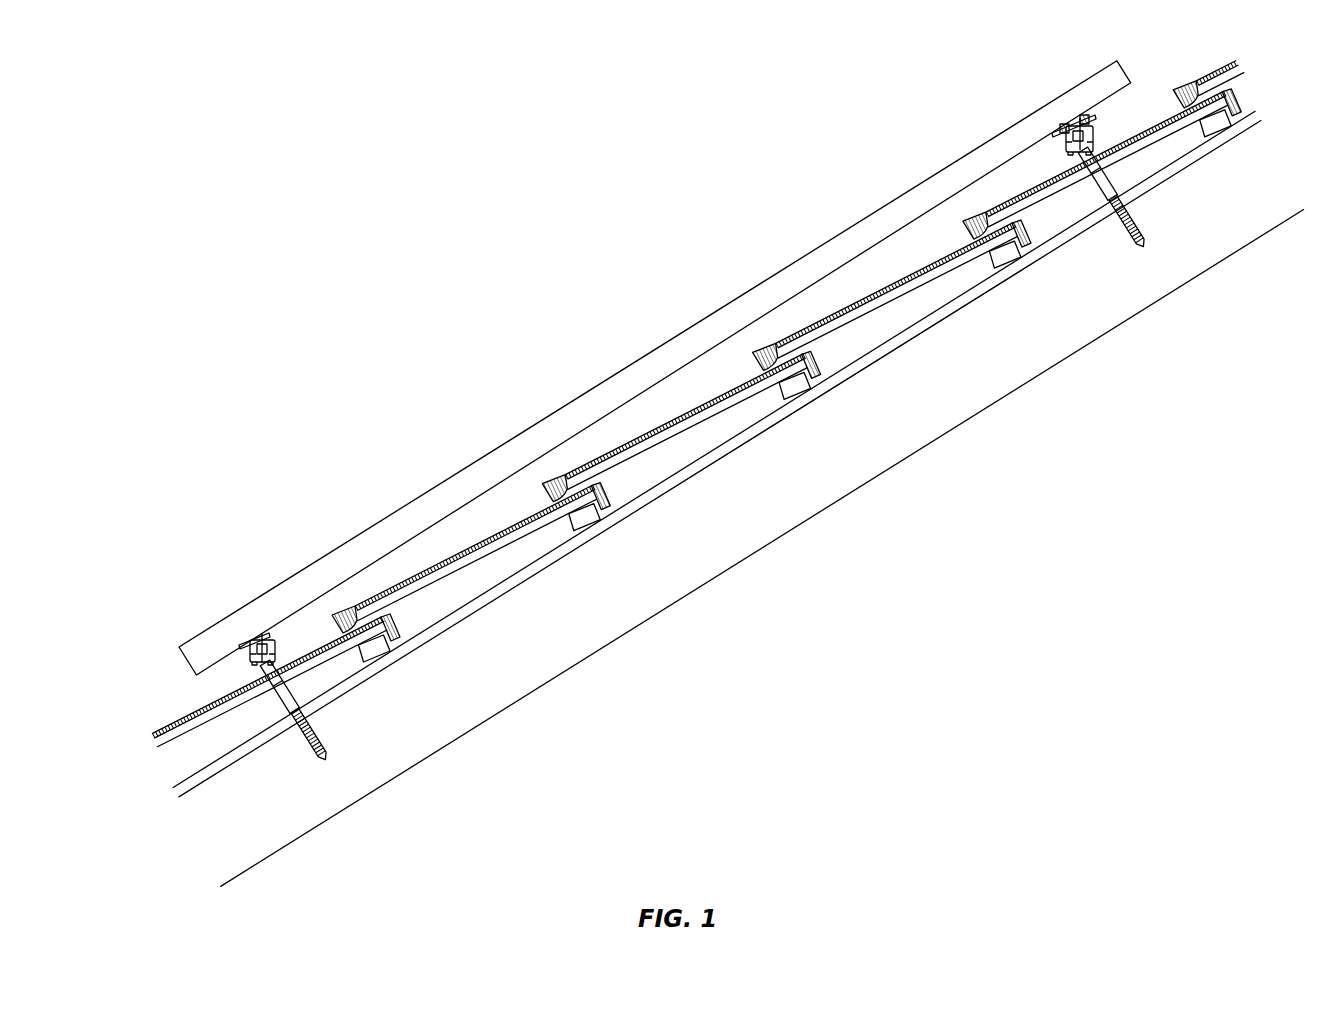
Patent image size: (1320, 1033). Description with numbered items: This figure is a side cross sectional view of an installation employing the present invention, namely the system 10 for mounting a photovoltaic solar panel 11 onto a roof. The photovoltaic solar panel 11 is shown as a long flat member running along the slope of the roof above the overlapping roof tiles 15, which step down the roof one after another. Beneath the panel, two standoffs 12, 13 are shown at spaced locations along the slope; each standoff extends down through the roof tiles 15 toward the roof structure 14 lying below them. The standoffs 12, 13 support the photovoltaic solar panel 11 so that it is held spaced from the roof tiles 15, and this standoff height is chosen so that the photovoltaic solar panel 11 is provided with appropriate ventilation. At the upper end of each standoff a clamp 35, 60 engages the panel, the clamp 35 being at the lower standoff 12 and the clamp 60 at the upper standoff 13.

The system 10 is at (274, 479).
The photovoltaic solar panel 11 is at (461, 471).
The standoff 12 is at (292, 703).
The standoff 13 is at (1107, 197).
The roof deck 14 is at (563, 628).
The roof tiles 15 is at (178, 718).
The clamp 35 is at (271, 636).
The clamp 60 is at (1092, 120).